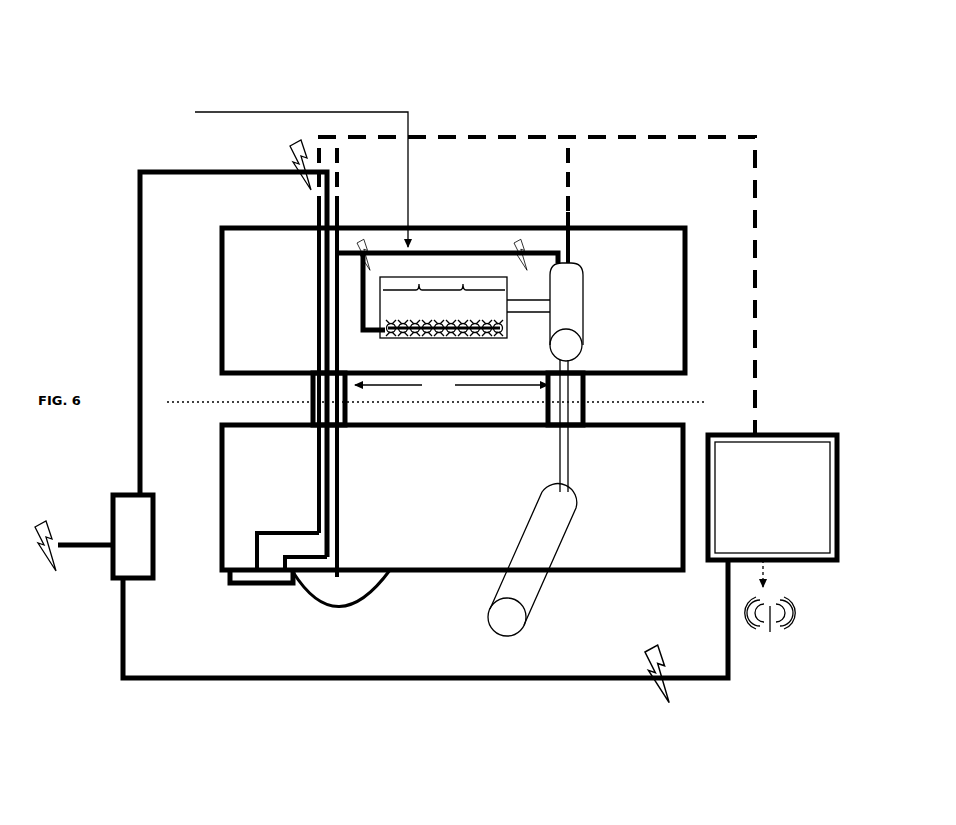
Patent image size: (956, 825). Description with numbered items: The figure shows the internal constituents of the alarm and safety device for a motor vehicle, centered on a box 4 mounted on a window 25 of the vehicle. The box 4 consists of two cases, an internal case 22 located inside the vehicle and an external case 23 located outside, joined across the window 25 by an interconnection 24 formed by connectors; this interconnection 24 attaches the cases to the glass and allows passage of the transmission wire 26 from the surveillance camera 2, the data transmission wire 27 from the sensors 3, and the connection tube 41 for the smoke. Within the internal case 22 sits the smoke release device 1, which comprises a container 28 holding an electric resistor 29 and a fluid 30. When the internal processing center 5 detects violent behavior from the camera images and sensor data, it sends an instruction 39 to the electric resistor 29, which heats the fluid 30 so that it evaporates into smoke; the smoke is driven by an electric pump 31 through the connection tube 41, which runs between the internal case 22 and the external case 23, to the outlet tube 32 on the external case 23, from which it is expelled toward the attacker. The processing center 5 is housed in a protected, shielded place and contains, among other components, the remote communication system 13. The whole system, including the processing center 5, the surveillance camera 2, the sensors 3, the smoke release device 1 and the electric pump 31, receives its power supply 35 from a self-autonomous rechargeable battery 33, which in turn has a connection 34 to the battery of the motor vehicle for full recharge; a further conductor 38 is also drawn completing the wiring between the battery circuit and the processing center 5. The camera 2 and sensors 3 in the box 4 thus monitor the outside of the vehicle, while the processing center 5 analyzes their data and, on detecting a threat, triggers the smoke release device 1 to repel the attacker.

The smoke release device 1 is at (517, 562).
The surveillance camera 2 is at (337, 609).
The sensor 3 is at (257, 586).
The box 4 is at (374, 390).
The internal processing center 5 is at (808, 432).
The remote communication system 13 is at (780, 634).
The internal case 22 is at (648, 225).
The external case 23 is at (667, 573).
The interconnection 24 is at (451, 387).
The window 25 is at (178, 405).
The transmission wire 26 is at (342, 497).
The data transmission wire 27 is at (275, 530).
The container 28 is at (470, 274).
The electric resistor 29 is at (389, 335).
The fluid 30 is at (404, 258).
The electric pump 31 is at (587, 319).
The outlet tube 32 is at (504, 619).
The rechargeable battery 33 is at (115, 492).
The connection to vehicle battery 34 is at (70, 549).
The power supply 35 is at (168, 168).
The conductor 38 is at (205, 681).
The instruction 39 is at (683, 122).
The connection tube 41 is at (572, 452).